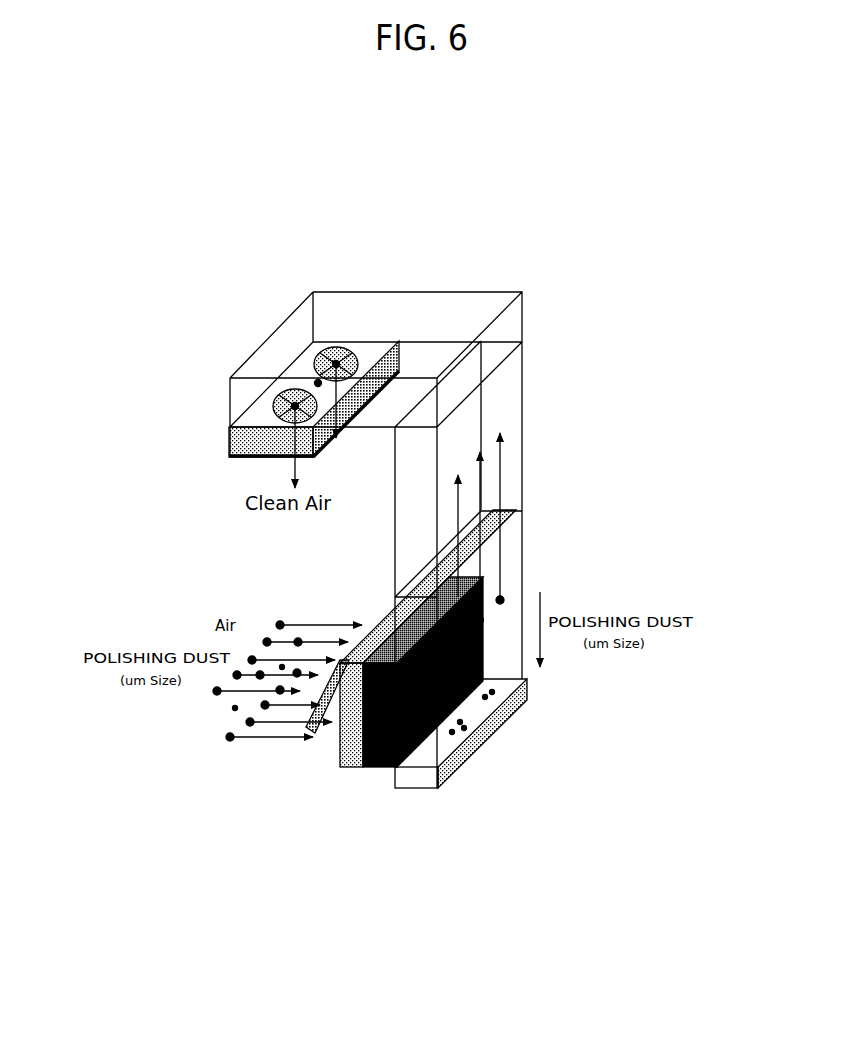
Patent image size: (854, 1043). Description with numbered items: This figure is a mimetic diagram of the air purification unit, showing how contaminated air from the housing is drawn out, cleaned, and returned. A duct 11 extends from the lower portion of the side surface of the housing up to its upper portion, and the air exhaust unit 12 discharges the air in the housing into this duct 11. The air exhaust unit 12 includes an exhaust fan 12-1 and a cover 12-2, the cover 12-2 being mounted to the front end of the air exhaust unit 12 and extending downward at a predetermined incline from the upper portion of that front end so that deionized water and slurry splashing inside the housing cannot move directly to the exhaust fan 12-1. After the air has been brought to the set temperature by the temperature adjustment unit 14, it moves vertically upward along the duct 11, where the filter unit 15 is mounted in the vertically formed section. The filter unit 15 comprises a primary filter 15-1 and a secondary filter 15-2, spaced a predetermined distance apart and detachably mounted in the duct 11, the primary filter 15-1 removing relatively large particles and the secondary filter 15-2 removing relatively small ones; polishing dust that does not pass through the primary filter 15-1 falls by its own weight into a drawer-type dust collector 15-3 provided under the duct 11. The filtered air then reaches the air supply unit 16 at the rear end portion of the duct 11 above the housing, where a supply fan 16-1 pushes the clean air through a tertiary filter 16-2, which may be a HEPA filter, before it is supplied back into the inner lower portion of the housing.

The duct 11 is at (509, 288).
The air exhaust unit 12 is at (222, 852).
The exhaust fan 12-1 is at (352, 758).
The cover 12-2 is at (323, 724).
The temperature adjustment unit 14 is at (378, 769).
The filter unit 15 is at (721, 455).
The primary filter 15-1 is at (519, 517).
The secondary filter 15-2 is at (506, 436).
The dust collector 15-3 is at (497, 722).
The air supply unit 16 is at (134, 400).
The supply fan 16-1 is at (271, 406).
The tertiary filter 16-2 is at (247, 459).